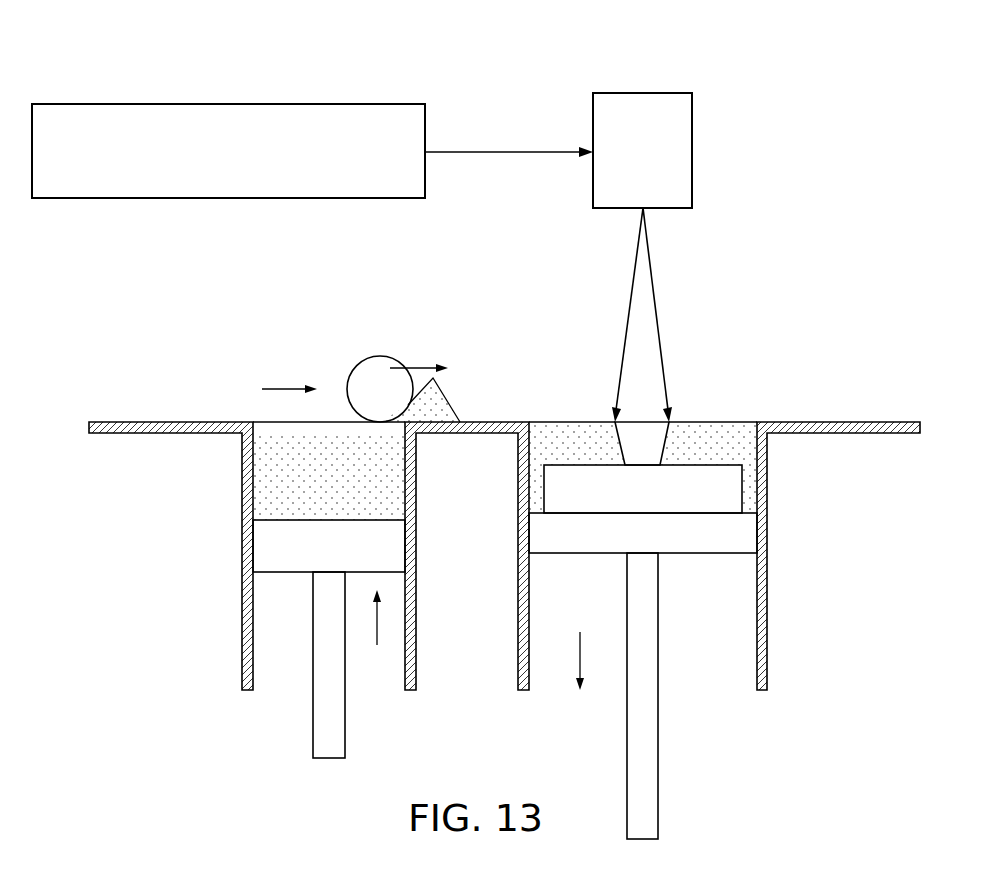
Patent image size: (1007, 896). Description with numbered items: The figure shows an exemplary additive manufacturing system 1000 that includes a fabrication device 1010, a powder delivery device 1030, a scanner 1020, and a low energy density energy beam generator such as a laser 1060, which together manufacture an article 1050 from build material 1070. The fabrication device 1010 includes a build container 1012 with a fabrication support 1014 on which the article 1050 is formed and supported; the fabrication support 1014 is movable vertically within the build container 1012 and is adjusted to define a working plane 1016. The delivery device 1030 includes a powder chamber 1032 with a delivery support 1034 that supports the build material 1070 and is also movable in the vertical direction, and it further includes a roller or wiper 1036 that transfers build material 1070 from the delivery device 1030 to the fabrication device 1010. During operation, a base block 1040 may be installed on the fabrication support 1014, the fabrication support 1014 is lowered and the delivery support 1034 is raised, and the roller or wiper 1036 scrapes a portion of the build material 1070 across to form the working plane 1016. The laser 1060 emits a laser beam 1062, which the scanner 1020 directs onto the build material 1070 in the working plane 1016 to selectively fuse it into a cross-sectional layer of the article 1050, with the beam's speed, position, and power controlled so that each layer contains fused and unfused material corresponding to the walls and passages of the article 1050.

The additive manufacturing system 1000 is at (822, 114).
The fabrication device 1010 is at (723, 590).
The build container 1012 is at (762, 452).
The fabrication support 1014 is at (710, 553).
The working plane 1016 is at (735, 428).
The scanner 1020 is at (644, 92).
The powder delivery device 1030 is at (281, 530).
The powder chamber 1032 is at (242, 485).
The delivery support 1034 is at (258, 545).
The roller or wiper 1036 is at (380, 357).
The base block 1040 is at (588, 503).
The article 1050 is at (596, 414).
The laser 1060 is at (236, 103).
The laser beam 1062 is at (512, 150).
The build material 1070 is at (262, 462).